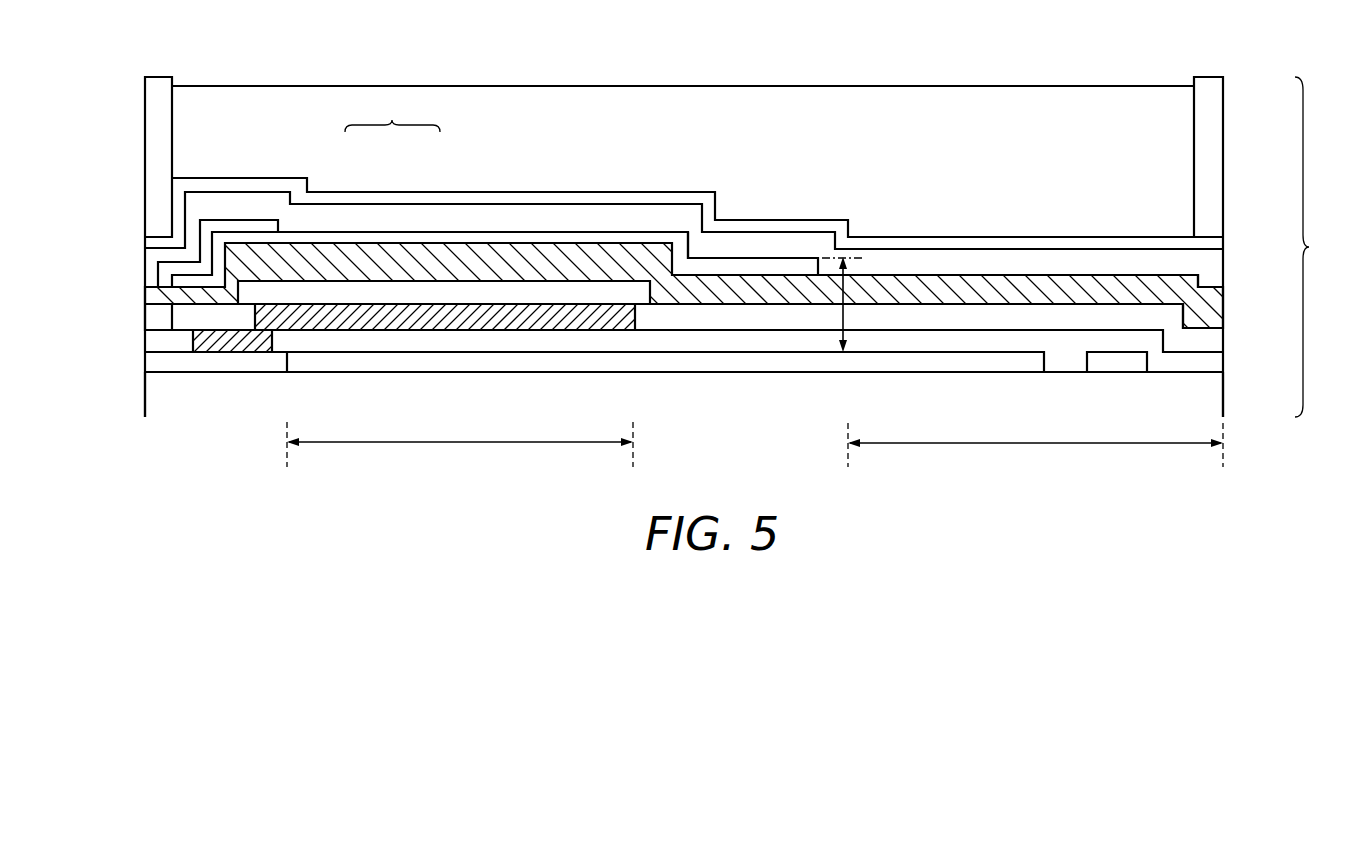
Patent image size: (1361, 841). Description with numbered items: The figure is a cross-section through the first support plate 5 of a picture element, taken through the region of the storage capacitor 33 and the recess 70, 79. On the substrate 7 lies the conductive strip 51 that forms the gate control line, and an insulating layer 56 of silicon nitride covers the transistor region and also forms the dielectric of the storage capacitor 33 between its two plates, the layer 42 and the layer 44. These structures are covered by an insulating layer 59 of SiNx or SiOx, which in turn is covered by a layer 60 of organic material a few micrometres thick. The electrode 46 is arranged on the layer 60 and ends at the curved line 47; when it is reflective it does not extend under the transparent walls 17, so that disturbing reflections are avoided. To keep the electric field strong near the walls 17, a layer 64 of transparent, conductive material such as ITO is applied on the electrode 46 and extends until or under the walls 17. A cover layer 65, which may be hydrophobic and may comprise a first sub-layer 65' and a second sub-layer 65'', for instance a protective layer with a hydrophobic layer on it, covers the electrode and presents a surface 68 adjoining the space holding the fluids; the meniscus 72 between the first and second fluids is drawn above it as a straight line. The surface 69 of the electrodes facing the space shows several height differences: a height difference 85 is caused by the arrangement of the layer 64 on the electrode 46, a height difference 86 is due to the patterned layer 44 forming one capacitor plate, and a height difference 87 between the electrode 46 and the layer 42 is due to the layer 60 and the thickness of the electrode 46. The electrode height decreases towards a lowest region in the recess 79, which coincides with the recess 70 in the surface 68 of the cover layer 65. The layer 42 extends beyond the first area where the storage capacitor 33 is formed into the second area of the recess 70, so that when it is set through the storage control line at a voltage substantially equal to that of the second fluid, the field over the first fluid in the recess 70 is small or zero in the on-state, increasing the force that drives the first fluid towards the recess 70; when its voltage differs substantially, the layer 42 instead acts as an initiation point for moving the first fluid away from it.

The first support plate 5 is at (1313, 247).
The substrate 7 is at (1215, 398).
The walls 17 is at (145, 78).
The storage capacitor 33 is at (460, 450).
The layer 42 is at (905, 360).
The layer 44 is at (427, 320).
The electrode 46 is at (487, 240).
The curved line 47 is at (822, 265).
The conductive strip 51 is at (1115, 363).
The insulating layer 56 is at (758, 345).
The insulating layer 59 is at (665, 318).
The layer 60 is at (1215, 307).
The layer of transparent, conductive material 64 is at (243, 225).
The cover layer 65 is at (391, 88).
The first sub-layer of insulating layer 65' is at (496, 175).
The second sub-layer of insulating layer 65'' is at (511, 165).
The surface 68 is at (565, 192).
The surface 69 is at (625, 232).
The recess 70 is at (1035, 459).
The meniscus 72 is at (784, 82).
The recess 79 is at (1035, 445).
The height difference 85 is at (280, 220).
The height difference 86 is at (690, 240).
The height difference 87 is at (843, 312).